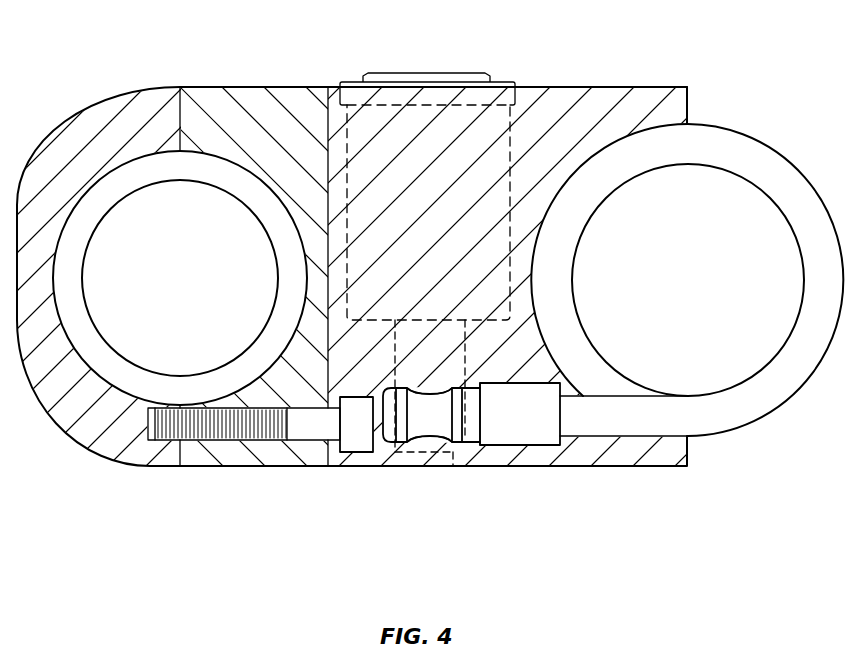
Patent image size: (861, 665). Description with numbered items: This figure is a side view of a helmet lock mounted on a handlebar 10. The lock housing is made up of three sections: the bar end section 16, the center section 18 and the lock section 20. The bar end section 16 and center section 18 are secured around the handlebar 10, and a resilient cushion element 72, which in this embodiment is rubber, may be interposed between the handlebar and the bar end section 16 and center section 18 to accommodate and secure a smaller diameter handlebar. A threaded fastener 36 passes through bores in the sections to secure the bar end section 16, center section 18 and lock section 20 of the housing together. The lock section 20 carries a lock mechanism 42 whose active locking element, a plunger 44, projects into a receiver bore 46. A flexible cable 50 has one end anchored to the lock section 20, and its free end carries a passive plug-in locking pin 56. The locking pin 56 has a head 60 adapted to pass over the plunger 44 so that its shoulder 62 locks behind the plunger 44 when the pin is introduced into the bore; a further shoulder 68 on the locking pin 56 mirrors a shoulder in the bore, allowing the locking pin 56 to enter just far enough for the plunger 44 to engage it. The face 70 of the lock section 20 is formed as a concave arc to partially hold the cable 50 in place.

The handlebar 10 is at (180, 278).
The bar end section 16 is at (75, 178).
The center section 18 is at (205, 118).
The lock section 20 is at (650, 100).
The threaded fastener 36 is at (224, 425).
The lock mechanism 42 is at (422, 132).
The plunger 44 is at (440, 415).
The receiver bore 46 is at (458, 470).
The cable 50 is at (735, 403).
The locking pin 56 is at (520, 414).
The head 60 is at (390, 410).
The shoulder 62 is at (432, 440).
The shoulder 68 is at (476, 450).
The face 70 is at (583, 160).
The cushion element 72 is at (36, 390).